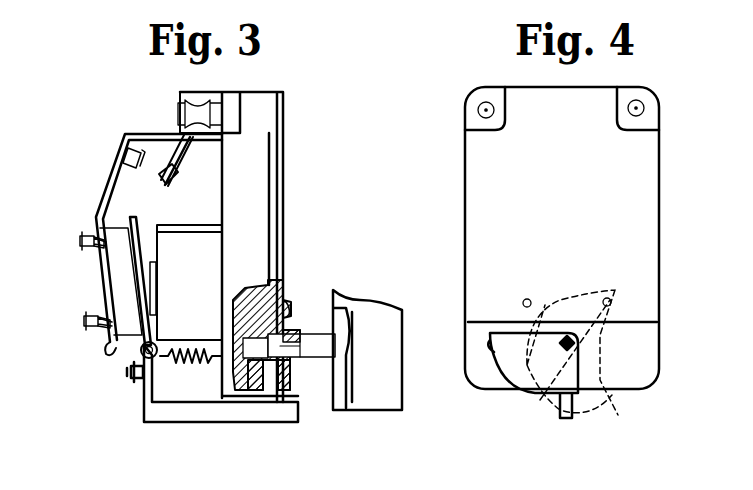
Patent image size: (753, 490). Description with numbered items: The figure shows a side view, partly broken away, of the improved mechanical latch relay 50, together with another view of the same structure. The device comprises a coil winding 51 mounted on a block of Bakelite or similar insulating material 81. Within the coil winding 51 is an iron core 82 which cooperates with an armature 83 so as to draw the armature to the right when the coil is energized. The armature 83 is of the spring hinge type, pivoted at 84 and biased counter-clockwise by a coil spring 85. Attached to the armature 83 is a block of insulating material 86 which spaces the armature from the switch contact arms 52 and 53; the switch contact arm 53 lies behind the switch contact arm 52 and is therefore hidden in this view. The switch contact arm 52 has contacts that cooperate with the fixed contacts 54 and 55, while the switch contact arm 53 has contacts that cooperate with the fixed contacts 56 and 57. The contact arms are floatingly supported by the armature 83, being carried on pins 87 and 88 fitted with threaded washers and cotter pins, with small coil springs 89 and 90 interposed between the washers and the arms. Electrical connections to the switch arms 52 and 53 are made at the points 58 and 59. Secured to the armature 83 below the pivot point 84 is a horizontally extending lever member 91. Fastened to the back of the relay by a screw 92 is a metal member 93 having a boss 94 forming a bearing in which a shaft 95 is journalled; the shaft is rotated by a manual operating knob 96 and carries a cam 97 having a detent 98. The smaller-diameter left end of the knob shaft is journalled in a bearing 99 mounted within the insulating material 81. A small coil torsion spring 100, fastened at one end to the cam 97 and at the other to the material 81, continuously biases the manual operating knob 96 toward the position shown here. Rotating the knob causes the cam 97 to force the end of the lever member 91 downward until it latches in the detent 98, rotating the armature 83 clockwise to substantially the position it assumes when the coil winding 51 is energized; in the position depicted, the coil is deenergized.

In FIG. 3, the mechanical latch relay 50 is at (293, 108).
In FIG. 3, the coil winding 51 is at (196, 290).
In FIG. 3, the switch contact arm 52 is at (108, 188).
In FIG. 3, the switch contact arm 53 is at (100, 206).
In FIG. 3, the fixed contact 54 is at (162, 184).
In FIG. 3, the fixed contact 55 is at (104, 160).
In FIG. 3, the fixed contact 56 is at (176, 148).
In FIG. 3, the fixed contact 57 is at (140, 130).
In FIG. 3, the electrical connection point 58 is at (104, 350).
In FIG. 3, the electrical connection point 59 is at (110, 350).
In FIG. 3, the block of insulating material 81 is at (252, 98).
In FIG. 4, the block of insulating material 81 is at (640, 183).
In FIG. 3, the iron core 82 is at (150, 250).
In FIG. 3, the armature 83 is at (128, 298).
In FIG. 3, the pivot 84 is at (141, 357).
In FIG. 3, the coil spring 85 is at (185, 400).
In FIG. 3, the block of insulating material 86 is at (122, 268).
In FIG. 3, the pin 87 is at (82, 246).
In FIG. 3, the pin 88 is at (84, 326).
In FIG. 3, the small coil spring 89 is at (98, 250).
In FIG. 3, the small coil spring 90 is at (106, 330).
In FIG. 3, the lever member 91 is at (222, 418).
In FIG. 3, the screw 92 is at (298, 282).
In FIG. 3, the metal member 93 is at (294, 300).
In FIG. 3, the boss 94 is at (300, 372).
In FIG. 3, the shaft 95 is at (300, 318).
In FIG. 3, the manual operating knob 96 is at (375, 318).
In FIG. 4, the manual operating knob 96 is at (618, 415).
In FIG. 3, the cam 97 is at (284, 396).
In FIG. 4, the cam 97 is at (512, 365).
In FIG. 4, the detent 98 is at (490, 346).
In FIG. 3, the bearing 99 is at (235, 363).
In FIG. 3, the coil torsion spring 100 is at (256, 396).